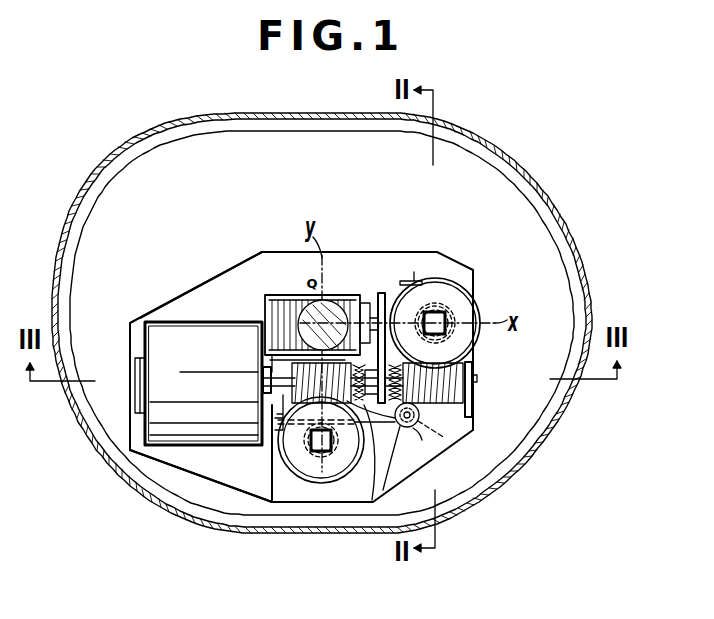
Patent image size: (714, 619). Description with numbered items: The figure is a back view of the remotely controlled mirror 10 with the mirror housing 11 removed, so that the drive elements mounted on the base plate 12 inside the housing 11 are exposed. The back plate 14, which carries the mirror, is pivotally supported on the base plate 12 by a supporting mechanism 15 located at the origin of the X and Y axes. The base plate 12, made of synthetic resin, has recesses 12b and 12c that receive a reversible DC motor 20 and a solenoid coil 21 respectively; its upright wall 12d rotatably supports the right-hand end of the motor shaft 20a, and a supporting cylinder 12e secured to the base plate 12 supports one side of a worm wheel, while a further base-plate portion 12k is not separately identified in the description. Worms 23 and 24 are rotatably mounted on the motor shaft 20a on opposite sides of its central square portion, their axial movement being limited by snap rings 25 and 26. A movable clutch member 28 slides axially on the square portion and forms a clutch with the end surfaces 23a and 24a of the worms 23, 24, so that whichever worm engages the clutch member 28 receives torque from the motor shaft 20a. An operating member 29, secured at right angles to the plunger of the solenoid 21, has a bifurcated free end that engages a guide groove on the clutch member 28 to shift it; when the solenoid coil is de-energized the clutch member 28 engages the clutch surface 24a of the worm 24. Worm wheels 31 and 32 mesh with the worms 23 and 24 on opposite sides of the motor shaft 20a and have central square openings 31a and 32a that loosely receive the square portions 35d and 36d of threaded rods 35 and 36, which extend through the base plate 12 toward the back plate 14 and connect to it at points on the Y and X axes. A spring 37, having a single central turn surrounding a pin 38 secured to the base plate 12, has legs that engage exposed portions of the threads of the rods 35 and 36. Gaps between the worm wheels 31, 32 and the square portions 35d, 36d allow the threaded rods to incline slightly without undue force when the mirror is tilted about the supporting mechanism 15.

The remotely controlled mirror 10 is at (502, 131).
The mirror housing 11 is at (553, 202).
The back plate 14 is at (178, 157).
The base plate 12 is at (204, 289).
The recess 12b is at (172, 463).
The recess 12c is at (267, 289).
The upright wall 12d is at (477, 397).
The supporting cylinder 12e is at (407, 281).
The housing partition wall 12k is at (273, 420).
The supporting mechanism 15 is at (335, 297).
The reversible DC motor 20 is at (193, 366).
The motor shaft 20a is at (477, 380).
The solenoid coil 21 is at (275, 294).
The worm 23 is at (266, 403).
The end surface 23a is at (364, 404).
The worm 24 is at (473, 422).
The clutch surface 24a is at (397, 427).
The snap ring 25 is at (263, 382).
The snap ring 26 is at (471, 400).
The movable clutch member 28 is at (390, 450).
The operating member 29 is at (380, 293).
The worm wheel 31 is at (315, 458).
The square opening 31a is at (326, 458).
The worm wheel 32 is at (466, 313).
The square opening 32a is at (430, 306).
The threaded rod 35 is at (302, 477).
The square portion 35d is at (321, 463).
The threaded rod 36 is at (436, 302).
The square portion 36d is at (446, 335).
The spring 37 is at (445, 438).
The pin 38 is at (415, 430).